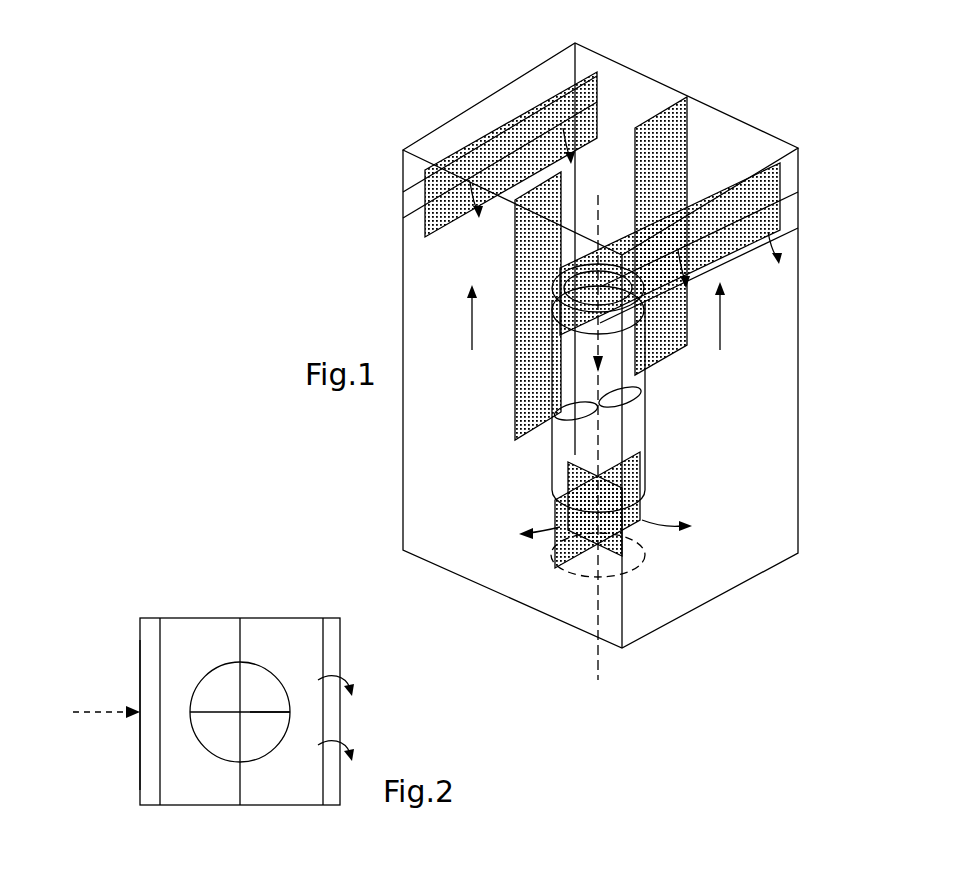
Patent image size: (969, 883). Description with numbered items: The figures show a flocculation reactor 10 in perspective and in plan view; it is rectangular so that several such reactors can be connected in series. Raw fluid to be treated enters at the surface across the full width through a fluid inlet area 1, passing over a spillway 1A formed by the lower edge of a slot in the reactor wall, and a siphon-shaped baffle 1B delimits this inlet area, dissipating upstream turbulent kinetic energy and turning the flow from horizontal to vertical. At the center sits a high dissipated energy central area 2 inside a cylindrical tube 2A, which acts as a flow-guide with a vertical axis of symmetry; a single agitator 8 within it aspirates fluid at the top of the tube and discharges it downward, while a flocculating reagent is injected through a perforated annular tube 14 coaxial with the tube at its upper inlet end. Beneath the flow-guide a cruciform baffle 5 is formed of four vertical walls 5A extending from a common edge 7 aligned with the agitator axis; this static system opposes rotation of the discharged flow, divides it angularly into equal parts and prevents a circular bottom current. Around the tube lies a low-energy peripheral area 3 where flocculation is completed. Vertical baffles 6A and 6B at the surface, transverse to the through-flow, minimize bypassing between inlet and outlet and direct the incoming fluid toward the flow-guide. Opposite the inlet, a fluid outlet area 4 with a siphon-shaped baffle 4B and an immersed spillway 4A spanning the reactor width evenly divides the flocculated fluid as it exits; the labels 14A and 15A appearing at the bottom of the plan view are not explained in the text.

In FIG. 1, the reactor 10 is at (778, 84).
In FIG. 2, the reactor 10 is at (268, 592).
In FIG. 1, the low-energy peripheral area 3 is at (776, 369).
In FIG. 1, the fluid inlet area 1 is at (410, 173).
In FIG. 2, the fluid inlet area 1 is at (152, 630).
In FIG. 1, the spillway 1A is at (428, 218).
In FIG. 2, the spillway 1A is at (140, 768).
In FIG. 1, the siphon-shaped baffle 1B is at (598, 93).
In FIG. 2, the siphon-shaped baffle 1B is at (170, 790).
In FIG. 1, the fluid outlet area 4 is at (806, 180).
In FIG. 2, the fluid outlet area 4 is at (330, 782).
In FIG. 1, the immersed spillway 4A is at (752, 248).
In FIG. 2, the immersed spillway 4A is at (340, 710).
In FIG. 1, the siphon-shaped baffle 4B is at (785, 215).
In FIG. 2, the siphon-shaped baffle 4B is at (325, 640).
In FIG. 1, the vertical baffle 6A is at (515, 398).
In FIG. 2, the vertical baffle 6A is at (232, 780).
In FIG. 1, the vertical baffle 6B is at (687, 118).
In FIG. 2, the vertical baffle 6B is at (250, 637).
In FIG. 1, the high dissipated energy central area 2 is at (645, 433).
In FIG. 2, the high dissipated energy central area 2 is at (218, 660).
In FIG. 1, the tube 2A is at (645, 418).
In FIG. 1, the perforated annular tube 14 is at (548, 276).
In FIG. 1, the agitator 8 is at (645, 402).
In FIG. 1, the cruciform baffle 5 is at (557, 565).
In FIG. 2, the cruciform baffle 5 is at (259, 745).
In FIG. 1, the vertical walls 5A is at (643, 517).
In FIG. 1, the common edge 7 is at (568, 506).
In FIG. 2, the flow arrow 14A is at (289, 880).
In FIG. 2, the flow arrow 15A is at (421, 880).